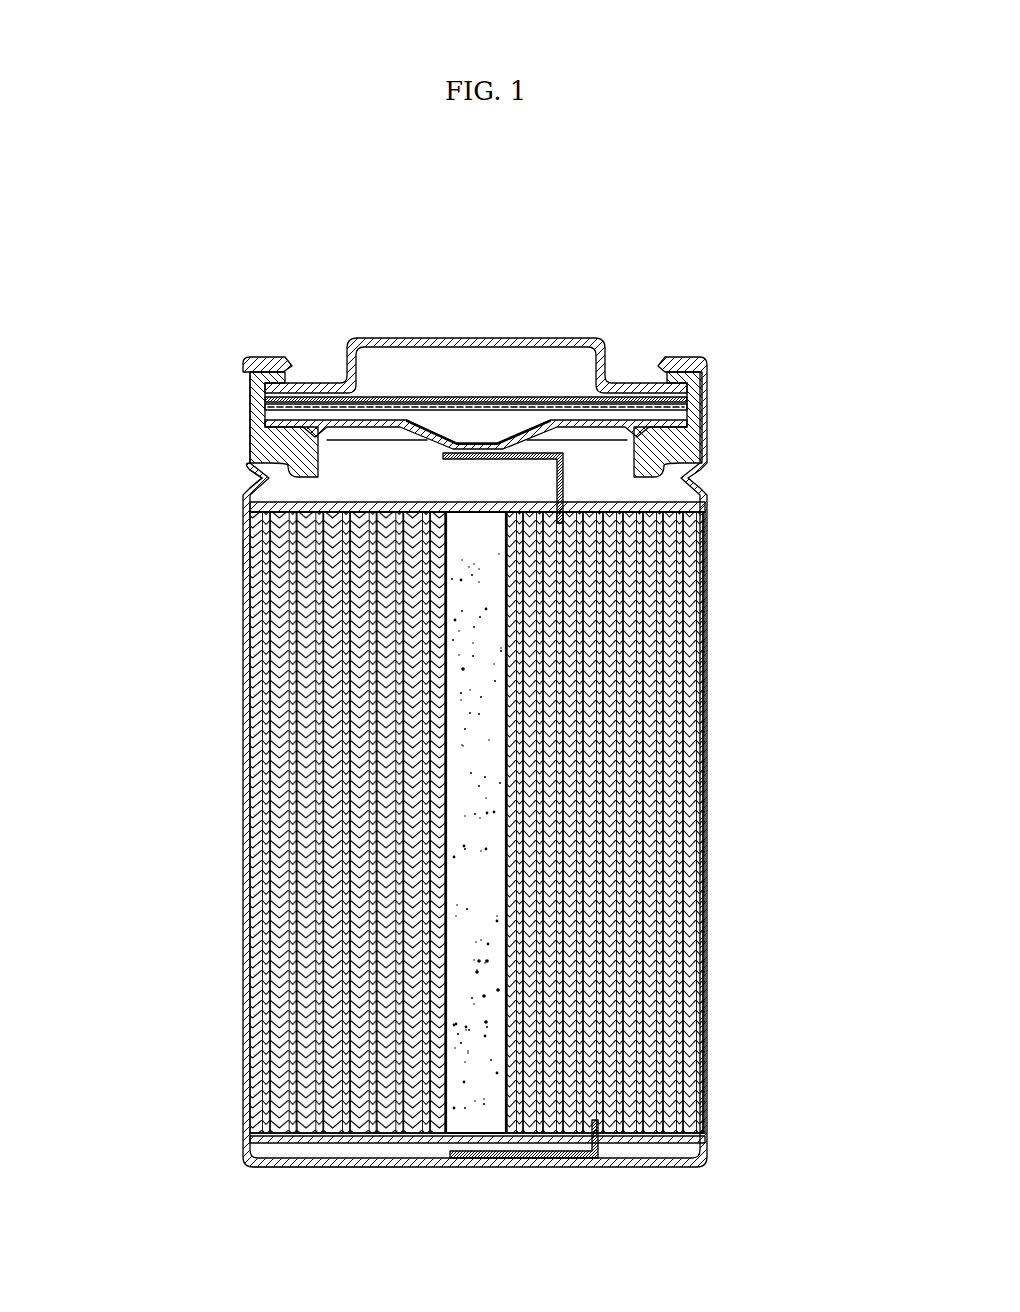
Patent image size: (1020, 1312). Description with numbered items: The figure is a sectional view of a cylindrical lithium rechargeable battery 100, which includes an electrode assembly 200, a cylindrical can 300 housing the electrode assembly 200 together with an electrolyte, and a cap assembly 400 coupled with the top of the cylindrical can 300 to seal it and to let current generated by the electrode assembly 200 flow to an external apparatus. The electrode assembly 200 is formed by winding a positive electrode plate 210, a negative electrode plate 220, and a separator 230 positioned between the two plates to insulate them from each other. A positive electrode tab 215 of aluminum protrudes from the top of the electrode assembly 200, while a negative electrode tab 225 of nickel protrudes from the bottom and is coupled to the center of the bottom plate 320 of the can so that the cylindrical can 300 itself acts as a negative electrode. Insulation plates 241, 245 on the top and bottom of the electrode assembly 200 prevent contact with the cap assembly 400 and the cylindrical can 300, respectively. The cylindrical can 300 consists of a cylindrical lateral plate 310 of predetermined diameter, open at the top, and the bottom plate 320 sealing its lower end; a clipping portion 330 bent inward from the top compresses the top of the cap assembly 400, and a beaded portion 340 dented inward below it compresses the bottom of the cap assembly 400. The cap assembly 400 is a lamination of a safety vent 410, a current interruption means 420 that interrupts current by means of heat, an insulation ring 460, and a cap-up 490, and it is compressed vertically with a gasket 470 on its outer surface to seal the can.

The cylindrical lithium rechargeable battery 100 is at (744, 314).
The electrode assembly 200 is at (858, 483).
The positive electrode plate 210 is at (665, 656).
The positive electrode tab 215 is at (710, 505).
The negative electrode plate 220 is at (693, 566).
The negative electrode tab 225 is at (590, 1168).
The separator 230 is at (683, 620).
The insulation plate 241 is at (563, 462).
The insulation plate 245 is at (688, 1143).
The cylindrical can 300 is at (100, 447).
The cylindrical lateral plate 310 is at (247, 557).
The bottom plate 320 is at (277, 1168).
The clipping portion 330 is at (243, 363).
The beaded portion 340 is at (258, 480).
The cap assembly 400 is at (555, 244).
The safety vent 410 is at (365, 418).
The current interruption means 420 is at (496, 418).
The insulation ring 460 is at (660, 375).
The gasket 470 is at (708, 417).
The cap-up 490 is at (368, 338).